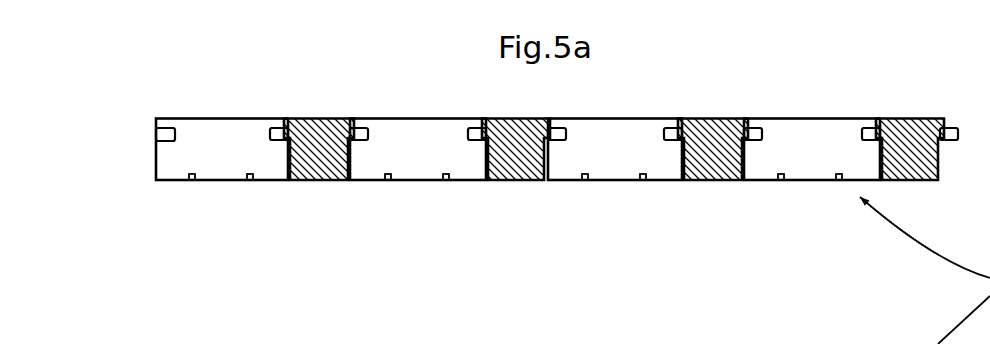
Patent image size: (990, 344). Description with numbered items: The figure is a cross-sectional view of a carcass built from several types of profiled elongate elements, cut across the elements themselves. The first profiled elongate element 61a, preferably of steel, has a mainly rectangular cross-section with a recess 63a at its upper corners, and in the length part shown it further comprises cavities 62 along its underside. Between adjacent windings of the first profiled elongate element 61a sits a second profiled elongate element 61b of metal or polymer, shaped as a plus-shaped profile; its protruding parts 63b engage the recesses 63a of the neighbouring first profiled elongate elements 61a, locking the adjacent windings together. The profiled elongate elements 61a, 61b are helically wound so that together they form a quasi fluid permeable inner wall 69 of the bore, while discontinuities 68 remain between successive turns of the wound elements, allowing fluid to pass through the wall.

The first profiled elongate element 61a is at (200, 145).
The second profiled elongate element 61b is at (327, 172).
The cavities 62 is at (249, 182).
The recess 63a is at (158, 133).
The protruding part 63b is at (953, 132).
The discontinuities 68 is at (292, 182).
The inner wall 69 is at (568, 190).